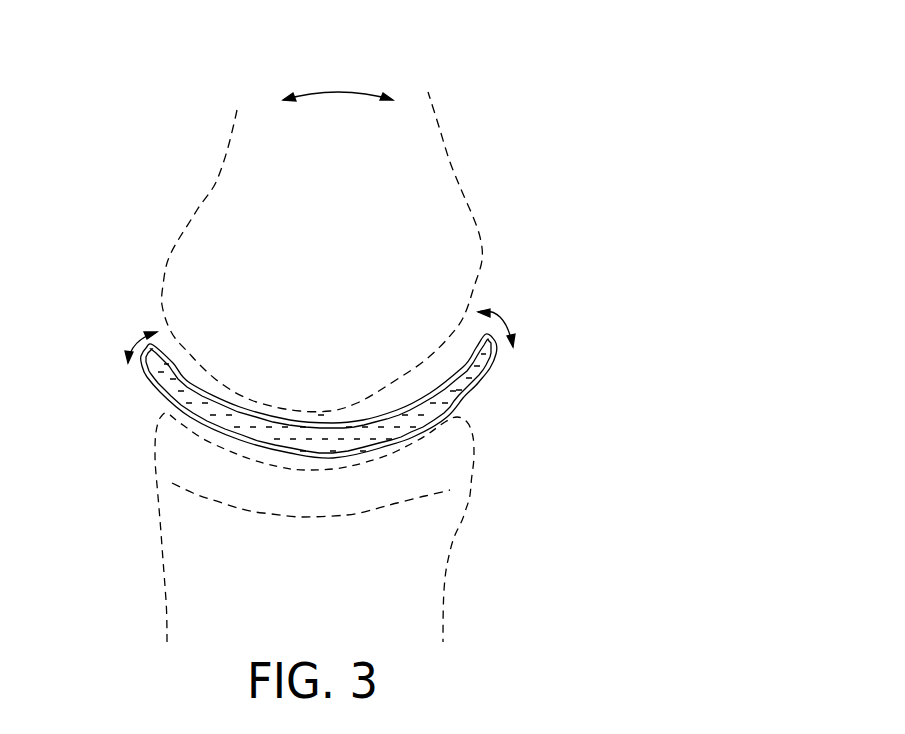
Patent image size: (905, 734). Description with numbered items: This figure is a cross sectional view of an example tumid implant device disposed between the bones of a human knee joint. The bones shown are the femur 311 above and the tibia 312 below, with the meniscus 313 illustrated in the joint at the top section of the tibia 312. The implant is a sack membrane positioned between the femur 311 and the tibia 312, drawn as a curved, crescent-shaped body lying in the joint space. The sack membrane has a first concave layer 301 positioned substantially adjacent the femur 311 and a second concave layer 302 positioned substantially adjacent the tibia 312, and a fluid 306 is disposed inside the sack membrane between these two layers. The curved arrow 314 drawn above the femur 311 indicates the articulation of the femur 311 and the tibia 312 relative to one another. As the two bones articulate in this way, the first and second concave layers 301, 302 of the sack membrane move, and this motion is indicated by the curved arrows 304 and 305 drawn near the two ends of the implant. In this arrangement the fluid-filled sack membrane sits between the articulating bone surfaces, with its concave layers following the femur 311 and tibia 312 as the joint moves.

The first concave layer 301 is at (200, 380).
The second concave layer 302 is at (160, 390).
The curved arrow 304 is at (508, 320).
The curved arrow 305 is at (135, 343).
The fluid 306 is at (463, 395).
The femur 311 is at (375, 173).
The tibia 312 is at (318, 558).
The meniscus 313 is at (375, 485).
The curved arrow 314 is at (347, 92).